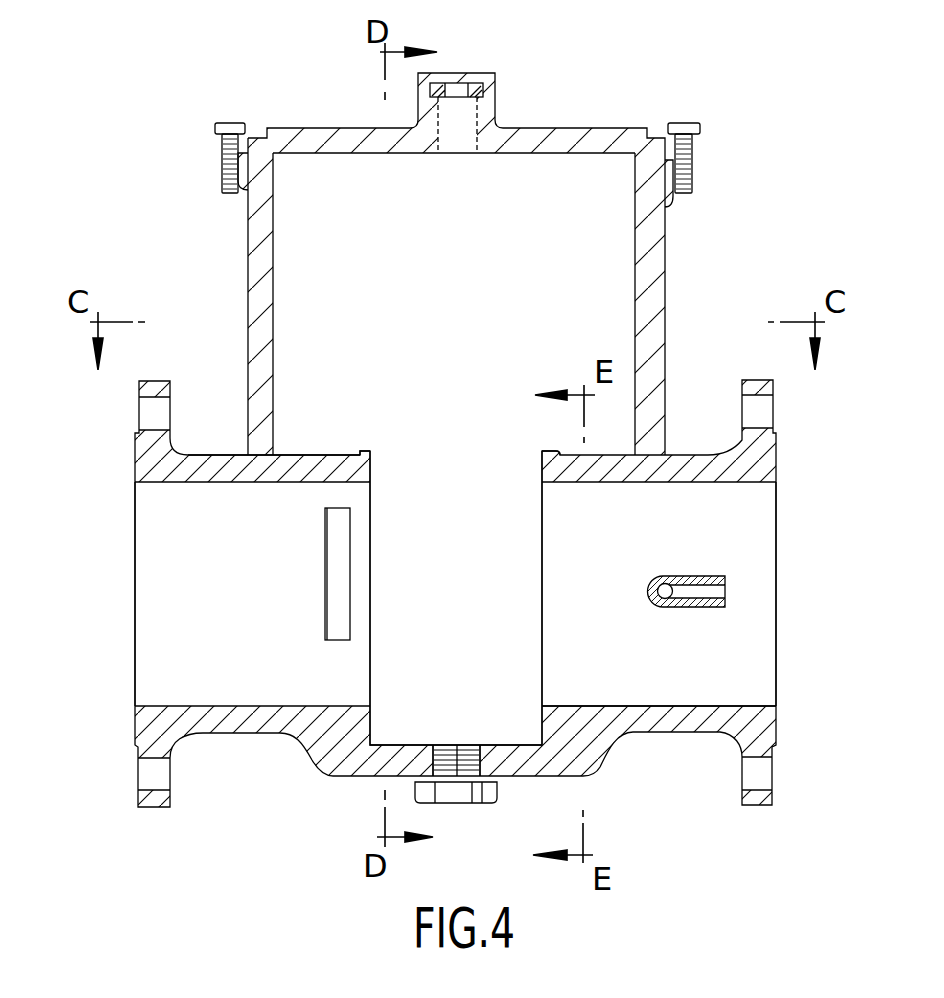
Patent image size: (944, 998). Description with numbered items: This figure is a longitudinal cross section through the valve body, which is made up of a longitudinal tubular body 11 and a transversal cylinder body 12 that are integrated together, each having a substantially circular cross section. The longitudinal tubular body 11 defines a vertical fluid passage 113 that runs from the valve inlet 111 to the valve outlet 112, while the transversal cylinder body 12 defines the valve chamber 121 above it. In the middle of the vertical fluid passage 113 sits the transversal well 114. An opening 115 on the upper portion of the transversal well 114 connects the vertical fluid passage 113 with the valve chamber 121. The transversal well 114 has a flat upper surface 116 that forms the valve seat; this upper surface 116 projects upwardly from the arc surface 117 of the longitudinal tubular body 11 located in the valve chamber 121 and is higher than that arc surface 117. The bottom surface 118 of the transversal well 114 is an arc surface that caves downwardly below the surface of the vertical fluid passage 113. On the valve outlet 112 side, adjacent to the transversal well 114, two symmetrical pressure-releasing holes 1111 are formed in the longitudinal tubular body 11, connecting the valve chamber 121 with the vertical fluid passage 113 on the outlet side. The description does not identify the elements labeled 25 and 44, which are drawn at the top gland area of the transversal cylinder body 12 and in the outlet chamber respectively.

The longitudinal tubular body 11 is at (317, 732).
The transversal cylinder body 12 is at (650, 231).
The gland 25 is at (498, 88).
The bore 44 is at (715, 607).
The valve inlet 111 is at (763, 692).
The valve outlet 112 is at (143, 647).
The vertical fluid passage 113 is at (560, 707).
The transversal well 114 is at (522, 575).
The opening 115 is at (442, 462).
The upper surface 116 is at (360, 453).
The arc surface 117 is at (308, 455).
The bottom surface 118 is at (417, 732).
The valve chamber 121 is at (348, 193).
The pressure-releasing holes 1111 is at (333, 613).